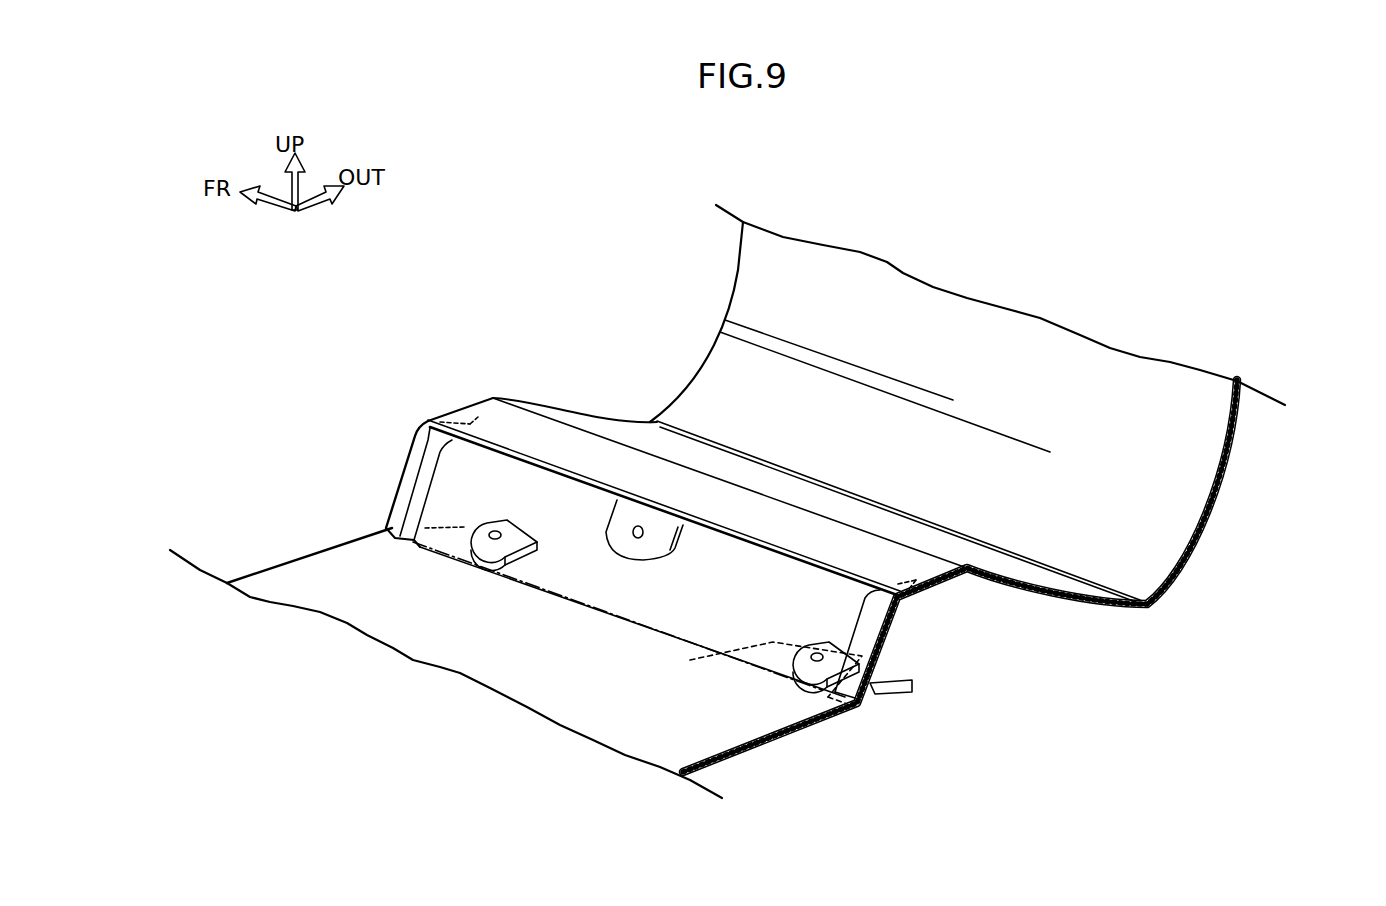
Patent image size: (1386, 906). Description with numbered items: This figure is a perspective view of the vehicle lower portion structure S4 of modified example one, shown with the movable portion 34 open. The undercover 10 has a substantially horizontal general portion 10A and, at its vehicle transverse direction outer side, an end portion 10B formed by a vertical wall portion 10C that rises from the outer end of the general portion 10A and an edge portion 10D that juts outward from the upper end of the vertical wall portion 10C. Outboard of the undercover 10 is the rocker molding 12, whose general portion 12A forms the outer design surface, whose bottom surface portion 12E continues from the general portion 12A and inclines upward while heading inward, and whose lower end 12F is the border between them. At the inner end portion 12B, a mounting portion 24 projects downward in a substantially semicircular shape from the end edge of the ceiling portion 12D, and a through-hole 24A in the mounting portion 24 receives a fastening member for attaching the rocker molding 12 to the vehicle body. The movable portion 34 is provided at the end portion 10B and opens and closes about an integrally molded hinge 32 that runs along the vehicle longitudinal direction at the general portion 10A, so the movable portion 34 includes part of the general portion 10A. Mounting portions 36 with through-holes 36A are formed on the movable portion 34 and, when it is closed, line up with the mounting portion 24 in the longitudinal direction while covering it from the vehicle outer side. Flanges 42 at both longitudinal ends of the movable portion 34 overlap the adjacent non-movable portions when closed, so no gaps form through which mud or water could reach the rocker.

The undercover 10 is at (798, 757).
The general portion 10A is at (750, 750).
The end portion 10B is at (312, 312).
The vertical wall portion 10C is at (398, 476).
The edge portion 10D is at (426, 424).
The rocker molding 12 is at (1252, 490).
The general portion 12A is at (1240, 441).
The end portion 12B is at (707, 495).
The ceiling portion 12D is at (902, 511).
The bottom surface portion 12E is at (962, 552).
The lower end 12F is at (1152, 607).
The mounting portion 24 is at (622, 565).
The through-hole 24A is at (636, 537).
The hinge 32 is at (605, 620).
The movable portion 34 is at (915, 683).
The mounting portion 36 is at (460, 548).
The through-hole 36A is at (496, 533).
The flange 42 is at (878, 695).
The space S4 is at (515, 290).